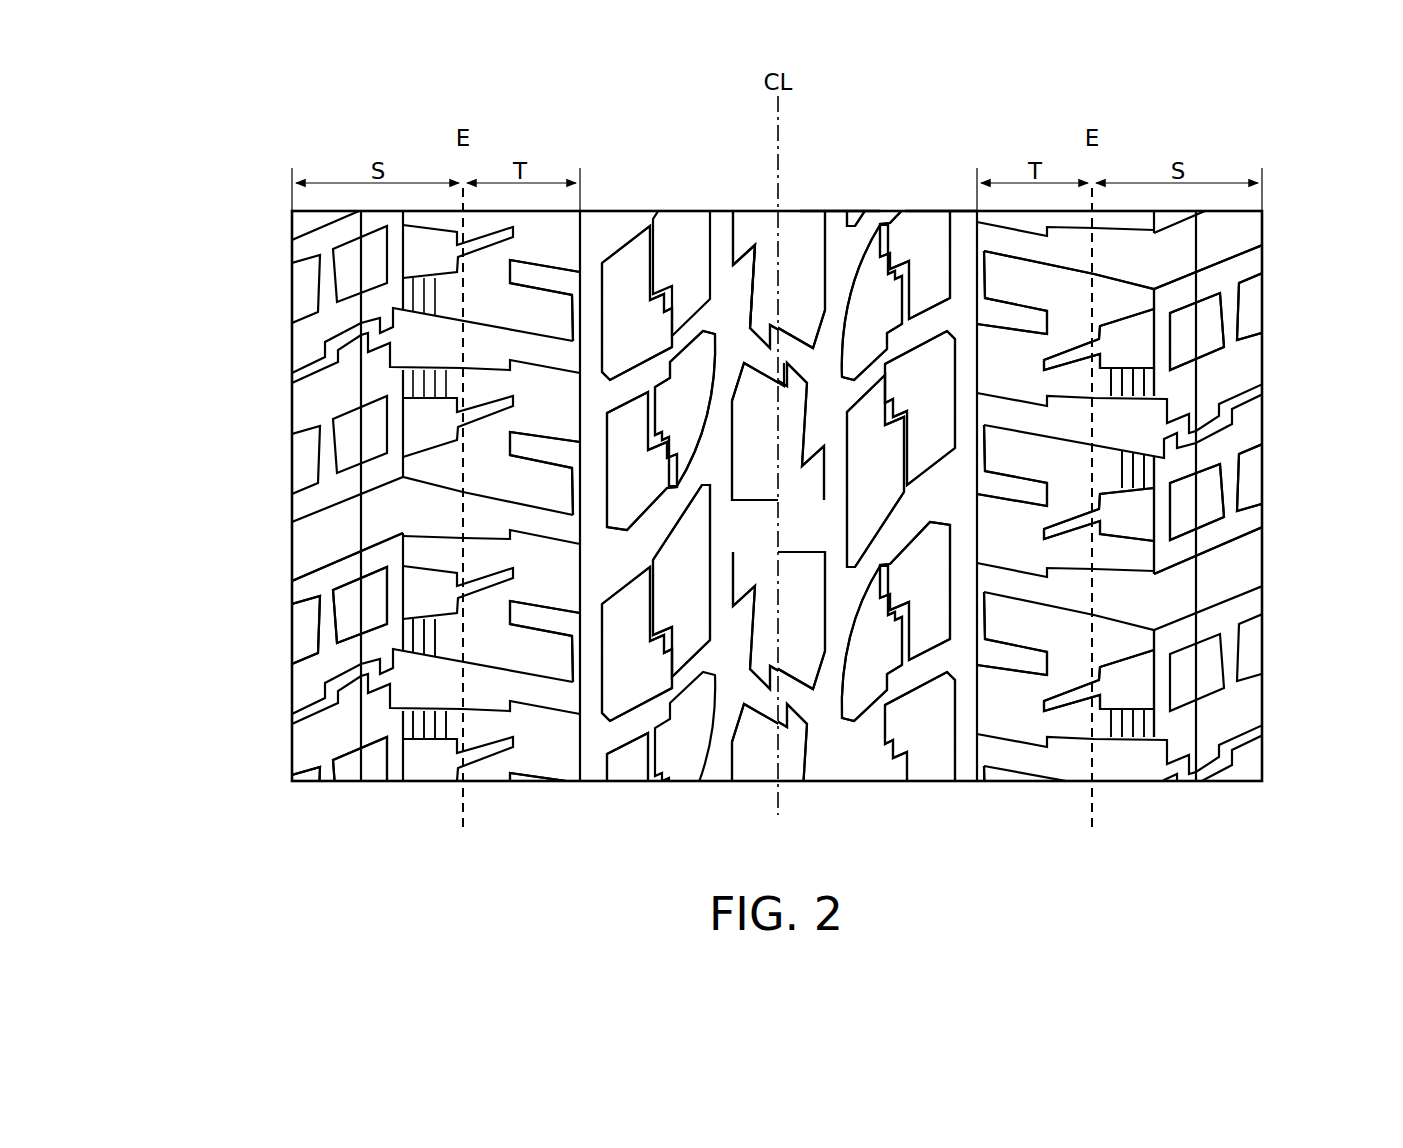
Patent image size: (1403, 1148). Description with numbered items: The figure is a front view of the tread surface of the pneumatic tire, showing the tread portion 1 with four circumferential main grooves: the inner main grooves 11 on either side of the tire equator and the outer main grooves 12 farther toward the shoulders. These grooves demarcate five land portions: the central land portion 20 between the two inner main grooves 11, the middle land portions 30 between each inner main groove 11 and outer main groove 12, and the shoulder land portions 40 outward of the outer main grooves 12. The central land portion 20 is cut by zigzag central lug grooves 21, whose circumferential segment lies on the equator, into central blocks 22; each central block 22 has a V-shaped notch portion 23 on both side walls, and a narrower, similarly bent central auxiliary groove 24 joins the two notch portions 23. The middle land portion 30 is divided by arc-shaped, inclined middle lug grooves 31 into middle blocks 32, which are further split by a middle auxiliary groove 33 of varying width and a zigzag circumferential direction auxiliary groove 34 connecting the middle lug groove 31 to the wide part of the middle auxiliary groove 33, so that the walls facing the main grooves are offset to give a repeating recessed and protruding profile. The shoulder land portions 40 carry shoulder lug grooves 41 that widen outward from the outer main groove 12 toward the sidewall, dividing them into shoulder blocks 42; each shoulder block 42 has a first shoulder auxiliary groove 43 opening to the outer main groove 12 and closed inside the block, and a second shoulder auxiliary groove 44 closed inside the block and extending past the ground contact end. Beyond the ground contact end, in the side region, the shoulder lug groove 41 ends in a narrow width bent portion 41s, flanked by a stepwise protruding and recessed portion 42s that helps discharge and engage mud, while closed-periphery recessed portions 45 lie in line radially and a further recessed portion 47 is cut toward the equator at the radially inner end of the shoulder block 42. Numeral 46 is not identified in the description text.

The tread portion 1 is at (884, 178).
The inner main groove 11 is at (835, 224).
The outer main groove 12 is at (961, 216).
The central land portion 20 is at (760, 209).
The central lug groove 21 is at (807, 522).
The central block 22 is at (740, 735).
The notch portion 23 is at (755, 244).
The central auxiliary groove 24 is at (790, 340).
The middle land portion 30 is at (670, 209).
The middle lug groove 31 is at (913, 522).
The middle block 32 is at (625, 705).
The middle auxiliary groove 33 is at (868, 735).
The circumferential direction auxiliary groove 34 is at (652, 390).
The shoulder land portion 40 is at (543, 209).
The shoulder lug groove 41 is at (1130, 478).
The narrow width bent portion 41s is at (1165, 432).
The shoulder block 42 is at (548, 662).
The protruding and recessed portion 42s is at (410, 632).
The first shoulder auxiliary groove 43 is at (1000, 655).
The second shoulder auxiliary groove 44 is at (1062, 712).
The recessed portion 45 is at (1135, 690).
The shoulder block 46 is at (357, 757).
The recessed portion 47 is at (1235, 656).